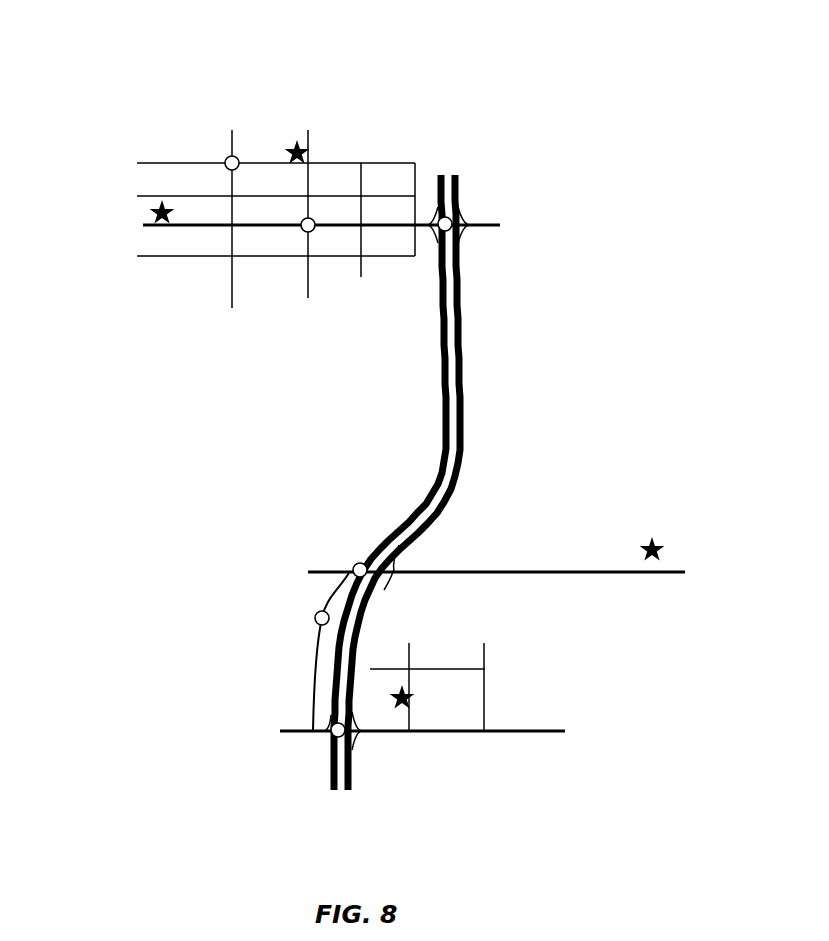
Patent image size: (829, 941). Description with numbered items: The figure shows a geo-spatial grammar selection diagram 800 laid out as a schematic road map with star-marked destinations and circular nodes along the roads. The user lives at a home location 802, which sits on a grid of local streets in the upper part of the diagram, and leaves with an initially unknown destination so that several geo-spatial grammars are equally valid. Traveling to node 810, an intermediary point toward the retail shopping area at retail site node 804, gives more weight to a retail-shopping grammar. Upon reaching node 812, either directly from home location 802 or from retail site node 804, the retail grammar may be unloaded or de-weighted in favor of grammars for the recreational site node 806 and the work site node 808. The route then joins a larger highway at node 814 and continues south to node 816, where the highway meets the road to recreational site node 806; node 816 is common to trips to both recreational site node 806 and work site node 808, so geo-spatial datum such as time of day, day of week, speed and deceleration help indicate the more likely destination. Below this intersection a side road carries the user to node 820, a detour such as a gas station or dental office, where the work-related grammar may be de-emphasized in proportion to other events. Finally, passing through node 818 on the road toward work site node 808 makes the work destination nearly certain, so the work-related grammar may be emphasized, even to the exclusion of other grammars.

The geo-spatial grammar selection diagram 800 is at (716, 60).
The home location 802 is at (308, 150).
The retail site node 804 is at (153, 207).
The recreational site node 806 is at (641, 546).
The work site node 808 is at (412, 696).
The node 810 is at (226, 158).
The node 812 is at (304, 231).
The node 814 is at (440, 230).
The node 816 is at (354, 565).
The node 818 is at (333, 737).
The node 820 is at (316, 623).